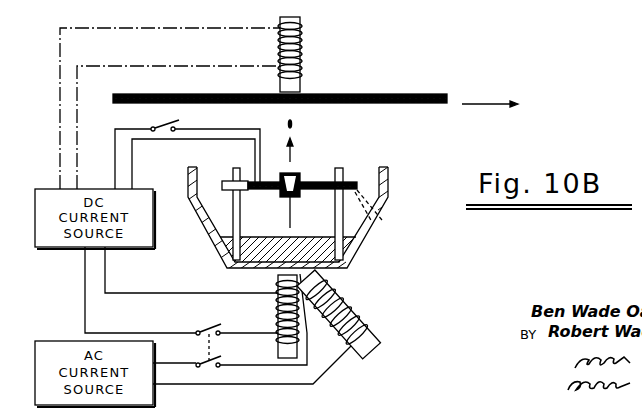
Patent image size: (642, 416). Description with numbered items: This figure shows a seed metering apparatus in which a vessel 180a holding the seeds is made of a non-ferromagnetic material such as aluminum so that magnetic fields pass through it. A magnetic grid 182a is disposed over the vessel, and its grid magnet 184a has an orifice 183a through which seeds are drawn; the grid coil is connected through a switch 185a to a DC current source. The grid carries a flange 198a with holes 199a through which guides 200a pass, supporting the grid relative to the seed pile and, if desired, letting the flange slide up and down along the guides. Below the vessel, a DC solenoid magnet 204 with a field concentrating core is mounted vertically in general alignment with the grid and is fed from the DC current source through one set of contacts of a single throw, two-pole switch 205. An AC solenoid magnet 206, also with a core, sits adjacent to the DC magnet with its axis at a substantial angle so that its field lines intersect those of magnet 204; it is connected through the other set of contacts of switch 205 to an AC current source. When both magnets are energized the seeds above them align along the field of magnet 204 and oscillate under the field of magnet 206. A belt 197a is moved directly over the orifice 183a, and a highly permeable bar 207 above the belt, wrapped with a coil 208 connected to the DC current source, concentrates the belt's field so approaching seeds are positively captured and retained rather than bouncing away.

The vessel 180a is at (208, 233).
The magnetic grid 182a is at (298, 124).
The orifice 183a is at (288, 203).
The grid magnet 184a is at (307, 182).
The switch 185a is at (151, 127).
The belt 197a is at (395, 90).
The flange 198a is at (360, 186).
The holes 199a is at (381, 224).
The guides 200a is at (346, 175).
The DC solenoid magnet 204 is at (270, 313).
The single throw, two-pole switch 205 is at (211, 347).
The AC solenoid magnet 206 is at (374, 306).
The bar 207 is at (290, 82).
The coil 208 is at (277, 46).